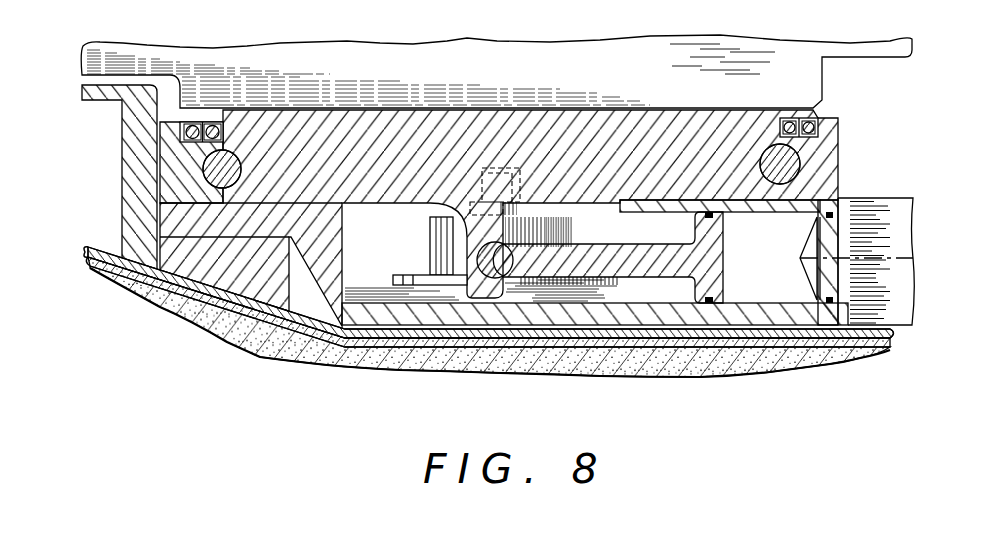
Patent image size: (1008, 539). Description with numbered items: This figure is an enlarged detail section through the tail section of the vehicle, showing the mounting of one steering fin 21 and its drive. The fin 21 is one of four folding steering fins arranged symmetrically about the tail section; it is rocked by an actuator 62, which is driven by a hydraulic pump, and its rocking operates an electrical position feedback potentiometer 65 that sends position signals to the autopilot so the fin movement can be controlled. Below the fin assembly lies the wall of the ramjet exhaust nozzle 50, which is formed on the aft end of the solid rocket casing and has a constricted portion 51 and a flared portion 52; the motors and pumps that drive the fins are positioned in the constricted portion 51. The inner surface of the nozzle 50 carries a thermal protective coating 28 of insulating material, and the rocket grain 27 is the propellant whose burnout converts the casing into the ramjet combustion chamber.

The steering fin 21 is at (288, 42).
The rocket grain 27 is at (853, 357).
The thermal protective coating 28 is at (722, 347).
The ramjet exhaust nozzle 50 is at (412, 348).
The constricted portion 51 is at (893, 328).
The flared portion 52 is at (90, 262).
The actuator 62 is at (635, 247).
The electrical position feedback potentiometer 65 is at (430, 231).